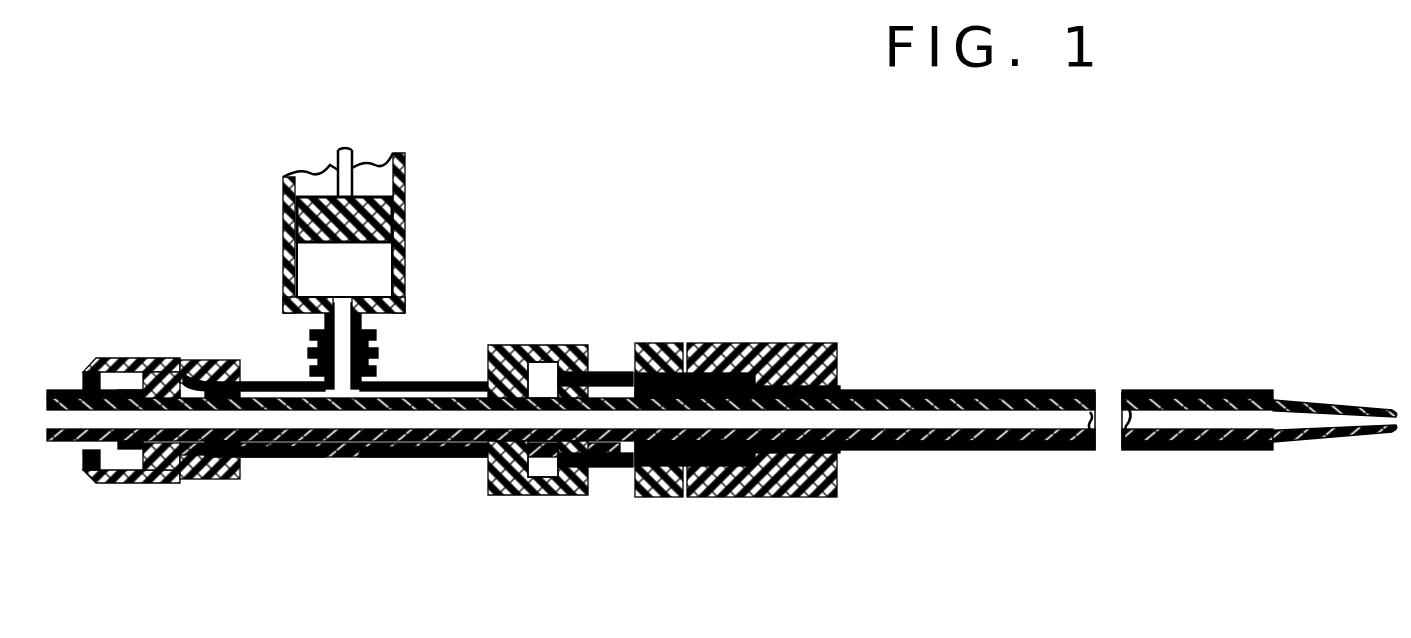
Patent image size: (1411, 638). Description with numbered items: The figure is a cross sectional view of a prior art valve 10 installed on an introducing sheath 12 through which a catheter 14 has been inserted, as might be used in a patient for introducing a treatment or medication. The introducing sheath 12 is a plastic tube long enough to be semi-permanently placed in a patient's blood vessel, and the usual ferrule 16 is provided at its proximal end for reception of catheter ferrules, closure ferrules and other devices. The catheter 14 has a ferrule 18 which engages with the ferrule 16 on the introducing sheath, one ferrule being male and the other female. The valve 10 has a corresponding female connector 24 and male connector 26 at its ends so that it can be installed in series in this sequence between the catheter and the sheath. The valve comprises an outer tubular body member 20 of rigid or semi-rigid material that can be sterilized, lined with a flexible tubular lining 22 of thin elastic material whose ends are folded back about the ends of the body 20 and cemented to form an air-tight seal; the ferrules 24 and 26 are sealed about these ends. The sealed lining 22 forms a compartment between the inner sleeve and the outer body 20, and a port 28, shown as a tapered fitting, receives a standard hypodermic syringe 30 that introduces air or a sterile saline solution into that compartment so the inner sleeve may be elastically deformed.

The valve 10 is at (392, 454).
The introducing sheath 12 is at (971, 390).
The catheter 14 is at (1055, 453).
The ferrule 16 is at (755, 497).
The ferrule 18 is at (125, 483).
The outer tubular body member 20 is at (446, 381).
The flexible tubular lining 22 is at (268, 386).
The female connector 24 is at (520, 495).
The male connector 26 is at (224, 480).
The port 28 is at (372, 336).
The hypodermic syringe 30 is at (405, 246).